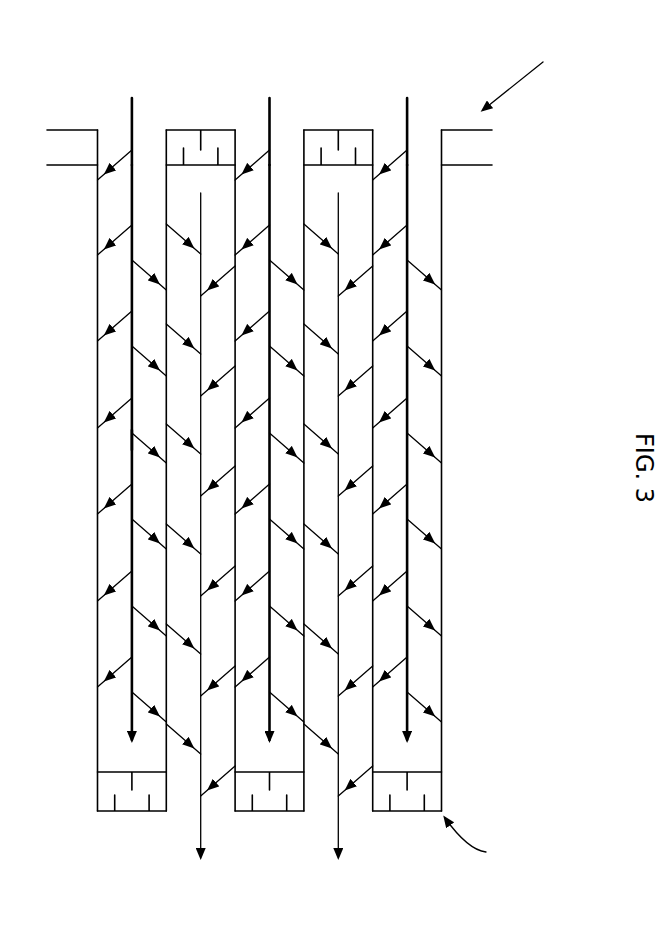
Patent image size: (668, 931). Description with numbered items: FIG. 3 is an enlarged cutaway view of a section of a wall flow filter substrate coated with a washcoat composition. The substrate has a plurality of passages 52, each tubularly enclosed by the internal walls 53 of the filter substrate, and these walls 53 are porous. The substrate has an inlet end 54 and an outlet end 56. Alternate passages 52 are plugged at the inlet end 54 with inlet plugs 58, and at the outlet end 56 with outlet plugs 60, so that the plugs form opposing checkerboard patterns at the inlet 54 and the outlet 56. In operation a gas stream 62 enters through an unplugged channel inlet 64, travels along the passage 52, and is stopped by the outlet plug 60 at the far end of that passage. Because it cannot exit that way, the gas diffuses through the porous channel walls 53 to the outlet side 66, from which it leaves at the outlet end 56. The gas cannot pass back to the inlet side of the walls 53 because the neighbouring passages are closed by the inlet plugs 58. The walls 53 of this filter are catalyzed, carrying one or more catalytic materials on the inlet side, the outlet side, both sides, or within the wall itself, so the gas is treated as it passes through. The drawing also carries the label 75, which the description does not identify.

The passages 52 is at (98, 180).
The internal walls 53 is at (235, 440).
The inlet end 54 is at (530, 79).
The outlet end 56 is at (478, 842).
The inlet plugs 58 is at (58, 132).
The outlet plugs 60 is at (130, 812).
The gas stream 62 is at (272, 103).
The unplugged channel inlet 64 is at (281, 132).
The outlet side 66 is at (256, 525).
The flow direction 75 is at (134, 440).